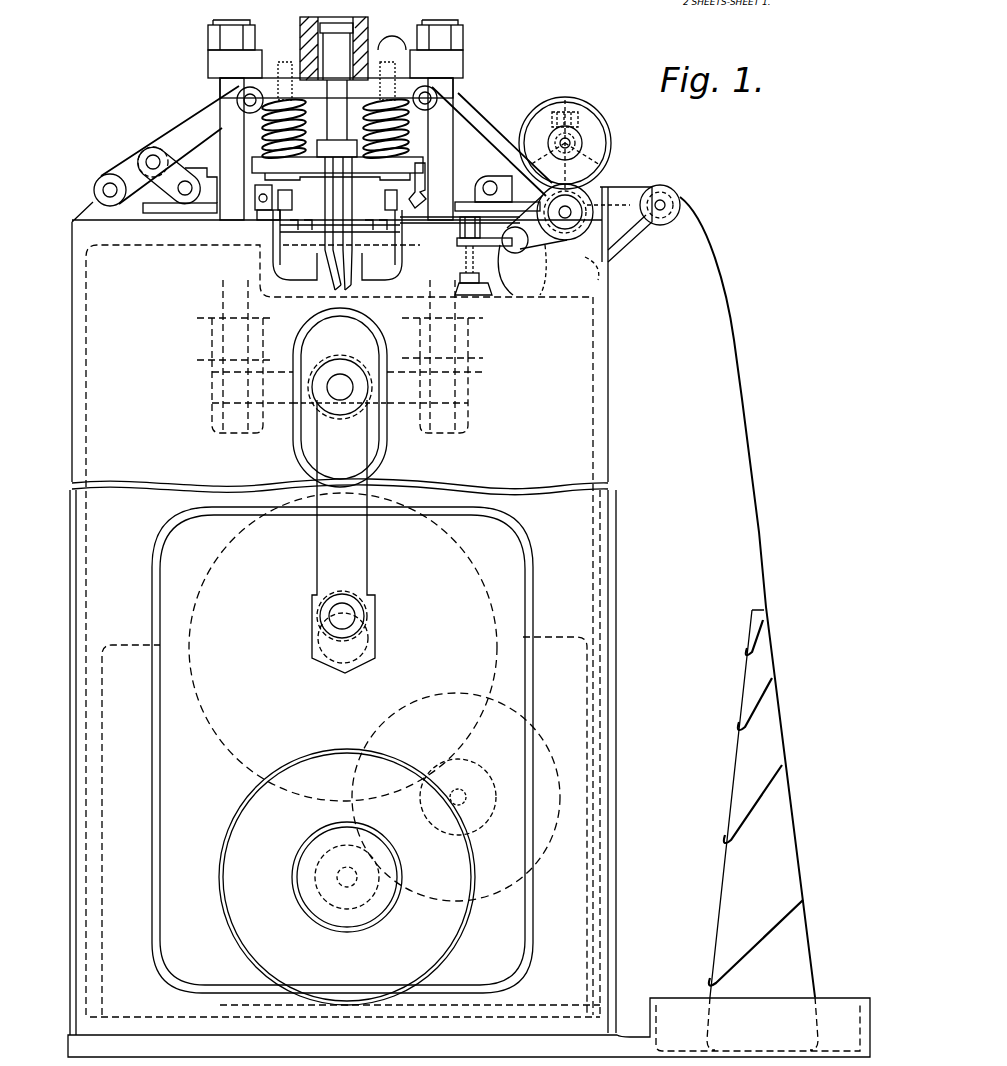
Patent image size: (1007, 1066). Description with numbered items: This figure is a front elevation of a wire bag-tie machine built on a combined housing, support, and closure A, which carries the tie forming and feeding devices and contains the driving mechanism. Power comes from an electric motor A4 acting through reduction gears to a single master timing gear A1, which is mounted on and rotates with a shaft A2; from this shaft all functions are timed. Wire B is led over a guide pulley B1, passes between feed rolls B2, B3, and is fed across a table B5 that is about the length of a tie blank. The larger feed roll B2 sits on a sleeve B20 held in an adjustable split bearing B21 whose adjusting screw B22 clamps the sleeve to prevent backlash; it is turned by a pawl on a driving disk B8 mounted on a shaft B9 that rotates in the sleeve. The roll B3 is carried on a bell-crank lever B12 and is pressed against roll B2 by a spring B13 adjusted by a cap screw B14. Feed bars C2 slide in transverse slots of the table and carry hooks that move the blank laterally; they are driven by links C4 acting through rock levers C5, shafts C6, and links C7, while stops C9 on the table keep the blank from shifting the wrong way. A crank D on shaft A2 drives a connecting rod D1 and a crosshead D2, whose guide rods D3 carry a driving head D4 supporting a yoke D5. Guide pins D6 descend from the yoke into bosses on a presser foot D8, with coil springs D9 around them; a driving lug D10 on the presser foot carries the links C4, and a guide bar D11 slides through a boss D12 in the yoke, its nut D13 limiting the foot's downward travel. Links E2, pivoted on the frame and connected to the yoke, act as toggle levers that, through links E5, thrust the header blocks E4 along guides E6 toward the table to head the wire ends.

The combined housing, support, and closure A is at (548, 448).
The master timing gear A1 is at (227, 743).
The shaft A2 is at (333, 657).
The electric motor A4 is at (240, 825).
The wire B is at (720, 272).
The guide pulley B1 is at (668, 192).
The feed roll B2 is at (557, 98).
The feed roll B3 is at (605, 232).
The table B5 is at (273, 220).
The driving disk B8 is at (607, 168).
The shaft B9 is at (560, 140).
The bell-crank lever B12 is at (513, 243).
The spring B13 is at (462, 232).
The cap screw B14 is at (472, 267).
The sleeve B20 is at (590, 143).
The adjustable split bearing B21 is at (583, 125).
The adjusting screw B22 is at (583, 113).
The feed bars C2 is at (388, 203).
The links C4 is at (338, 223).
The rock levers C5 is at (348, 288).
The shafts C6 is at (337, 248).
The links C7 is at (277, 225).
The stops C9 is at (256, 190).
The crank D is at (370, 640).
The connecting rod D1 is at (363, 547).
The crosshead D2 is at (308, 377).
The guide rods D3 is at (228, 160).
The driving head D4 is at (410, 55).
The yoke D5 is at (407, 88).
The guide pins D6 is at (273, 133).
The presser foot D8 is at (257, 166).
The coil springs D9 is at (237, 97).
The driving lug D10 is at (333, 147).
The guide bar D11 is at (336, 91).
The boss D12 is at (335, 49).
The nut D13 is at (300, 30).
The links E2 is at (182, 132).
The header blocks E4 is at (207, 213).
The links E5 is at (132, 213).
The guides E6 is at (158, 210).